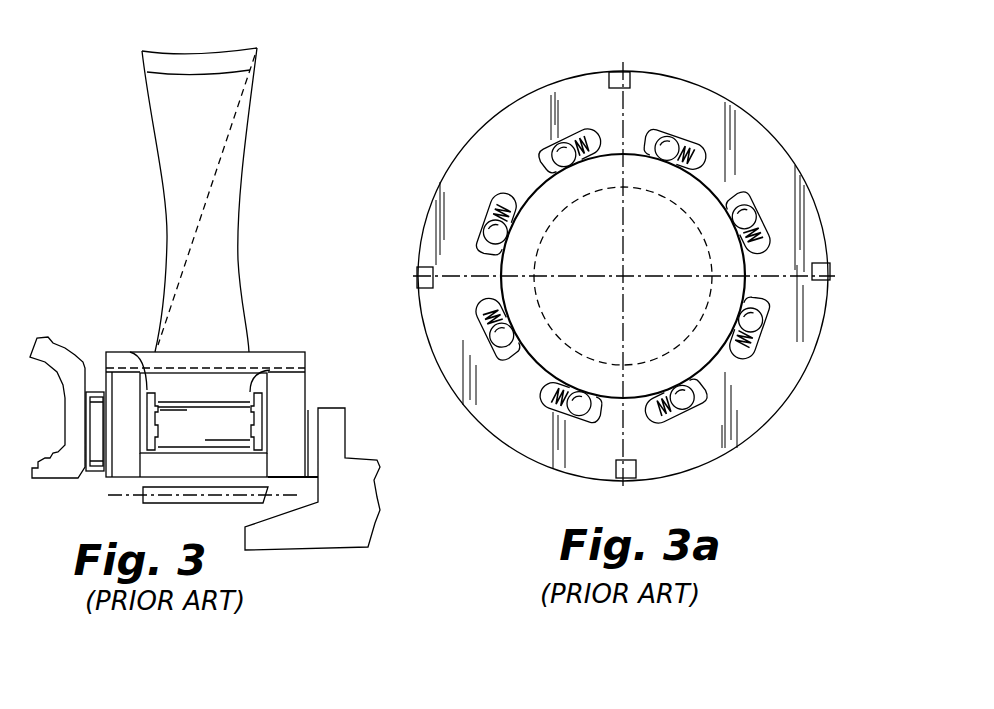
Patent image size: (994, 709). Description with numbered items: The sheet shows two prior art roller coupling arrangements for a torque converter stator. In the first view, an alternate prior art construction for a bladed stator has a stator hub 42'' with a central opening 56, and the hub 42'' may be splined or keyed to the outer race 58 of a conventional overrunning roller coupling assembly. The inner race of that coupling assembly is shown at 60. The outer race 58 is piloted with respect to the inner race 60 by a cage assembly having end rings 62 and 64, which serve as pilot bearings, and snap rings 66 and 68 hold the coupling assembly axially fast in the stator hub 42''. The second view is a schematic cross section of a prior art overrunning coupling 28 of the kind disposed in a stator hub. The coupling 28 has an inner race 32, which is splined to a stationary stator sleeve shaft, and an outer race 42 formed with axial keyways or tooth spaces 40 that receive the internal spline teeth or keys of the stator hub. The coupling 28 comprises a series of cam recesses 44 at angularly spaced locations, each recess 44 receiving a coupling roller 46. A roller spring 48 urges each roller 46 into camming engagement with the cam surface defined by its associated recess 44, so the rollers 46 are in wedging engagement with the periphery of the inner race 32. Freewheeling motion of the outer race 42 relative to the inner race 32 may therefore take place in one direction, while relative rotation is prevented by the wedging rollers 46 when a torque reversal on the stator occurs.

In FIG. 3A, the overrunning coupling 28 is at (731, 96).
In FIG. 3A, the inner race 32 is at (795, 250).
In FIG. 3A, the axial keyways 40 is at (617, 72).
In FIG. 3A, the outer race 42 is at (632, 242).
In FIG. 3, the stator hub 42'' is at (217, 200).
In FIG. 3A, the cam recesses 44 is at (746, 204).
In FIG. 3A, the coupling roller 46 is at (654, 136).
In FIG. 3A, the roller spring 48 is at (694, 136).
In FIG. 3, the central opening 56 is at (102, 392).
In FIG. 3, the outer race 58 is at (245, 372).
In FIG. 3, the inner race 60 is at (243, 475).
In FIG. 3, the end ring 62 is at (267, 452).
In FIG. 3, the end ring 64 is at (140, 485).
In FIG. 3, the snap ring 66 is at (148, 392).
In FIG. 3, the snap ring 68 is at (252, 392).